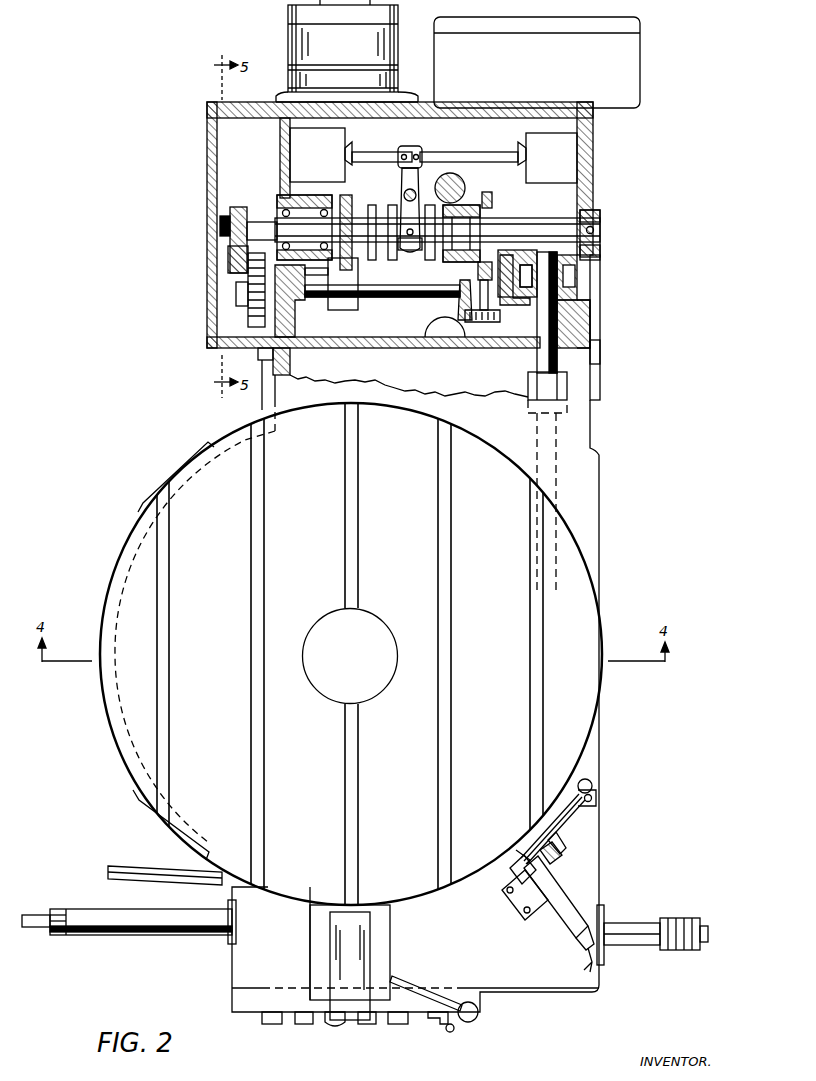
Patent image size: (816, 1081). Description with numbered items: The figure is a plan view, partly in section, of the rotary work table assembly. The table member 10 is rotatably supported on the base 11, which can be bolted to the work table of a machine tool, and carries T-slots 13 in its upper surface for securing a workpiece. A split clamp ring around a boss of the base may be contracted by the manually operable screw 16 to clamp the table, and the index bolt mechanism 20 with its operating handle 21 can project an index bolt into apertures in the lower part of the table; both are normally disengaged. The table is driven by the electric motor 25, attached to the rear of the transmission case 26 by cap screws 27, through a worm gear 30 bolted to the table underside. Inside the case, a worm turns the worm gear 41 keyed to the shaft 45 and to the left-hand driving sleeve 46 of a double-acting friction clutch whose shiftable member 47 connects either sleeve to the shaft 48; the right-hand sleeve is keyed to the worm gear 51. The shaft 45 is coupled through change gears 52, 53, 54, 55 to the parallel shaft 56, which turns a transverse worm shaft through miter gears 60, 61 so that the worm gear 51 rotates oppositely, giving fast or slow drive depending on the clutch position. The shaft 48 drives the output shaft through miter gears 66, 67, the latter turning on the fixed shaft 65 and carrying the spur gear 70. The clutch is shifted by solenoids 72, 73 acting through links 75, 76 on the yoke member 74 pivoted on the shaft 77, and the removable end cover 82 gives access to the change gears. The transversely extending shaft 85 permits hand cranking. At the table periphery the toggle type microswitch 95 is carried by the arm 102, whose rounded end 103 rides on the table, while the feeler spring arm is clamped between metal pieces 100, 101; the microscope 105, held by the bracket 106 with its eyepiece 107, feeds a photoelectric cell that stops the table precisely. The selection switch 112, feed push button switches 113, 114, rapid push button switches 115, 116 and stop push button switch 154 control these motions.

The table member 10 is at (422, 520).
The base 11 is at (599, 481).
The T-slots 13 is at (264, 563).
The manually operable screw 16 is at (122, 866).
The index bolt mechanism 20 is at (380, 950).
The operating handle 21 is at (478, 1012).
The electric motor 25 is at (288, 30).
The transmission case 26 is at (593, 145).
The cap screws 27 is at (600, 360).
The worm gear 30 is at (462, 186).
The worm gear 41 is at (330, 280).
The shaft 45 is at (305, 205).
The left-hand driving sleeve 46 is at (352, 207).
The shiftable member 47 is at (412, 252).
The shaft 48 is at (540, 222).
The worm gear 51 is at (485, 192).
The change gear 52 is at (242, 207).
The change gear 53 is at (228, 258).
The change gear 54 is at (236, 277).
The change gear 55 is at (248, 312).
The parallel shaft 56 is at (405, 297).
The miter gear 60 is at (462, 300).
The miter gear 61 is at (484, 322).
The fixed shaft 65 is at (590, 322).
The miter gear 66 is at (520, 250).
The miter gear 67 is at (574, 272).
The spur gear 70 is at (577, 290).
The solenoid 72 is at (340, 133).
The solenoid 73 is at (530, 133).
The yoke member 74 is at (422, 150).
The link 75 is at (372, 152).
The link 76 is at (488, 152).
The shaft 77 is at (400, 185).
The removable end cover 82 is at (207, 156).
The transversely extending shaft 85 is at (85, 935).
The toggle type microswitch 95 is at (565, 838).
The metal piece 100 is at (592, 781).
The metal piece 101 is at (596, 797).
The arm 102 is at (565, 820).
The rounded end 103 is at (512, 878).
The microscope 105 is at (566, 925).
The bracket 106 is at (512, 912).
The eyepiece 107 is at (556, 862).
The selection switch 112 is at (450, 1032).
The feed push button switch 113 is at (400, 1024).
The feed push button switch 114 is at (262, 1022).
The rapid push button switch 115 is at (367, 1024).
The rapid push button switch 116 is at (308, 1024).
The stop push button switch 154 is at (330, 1030).